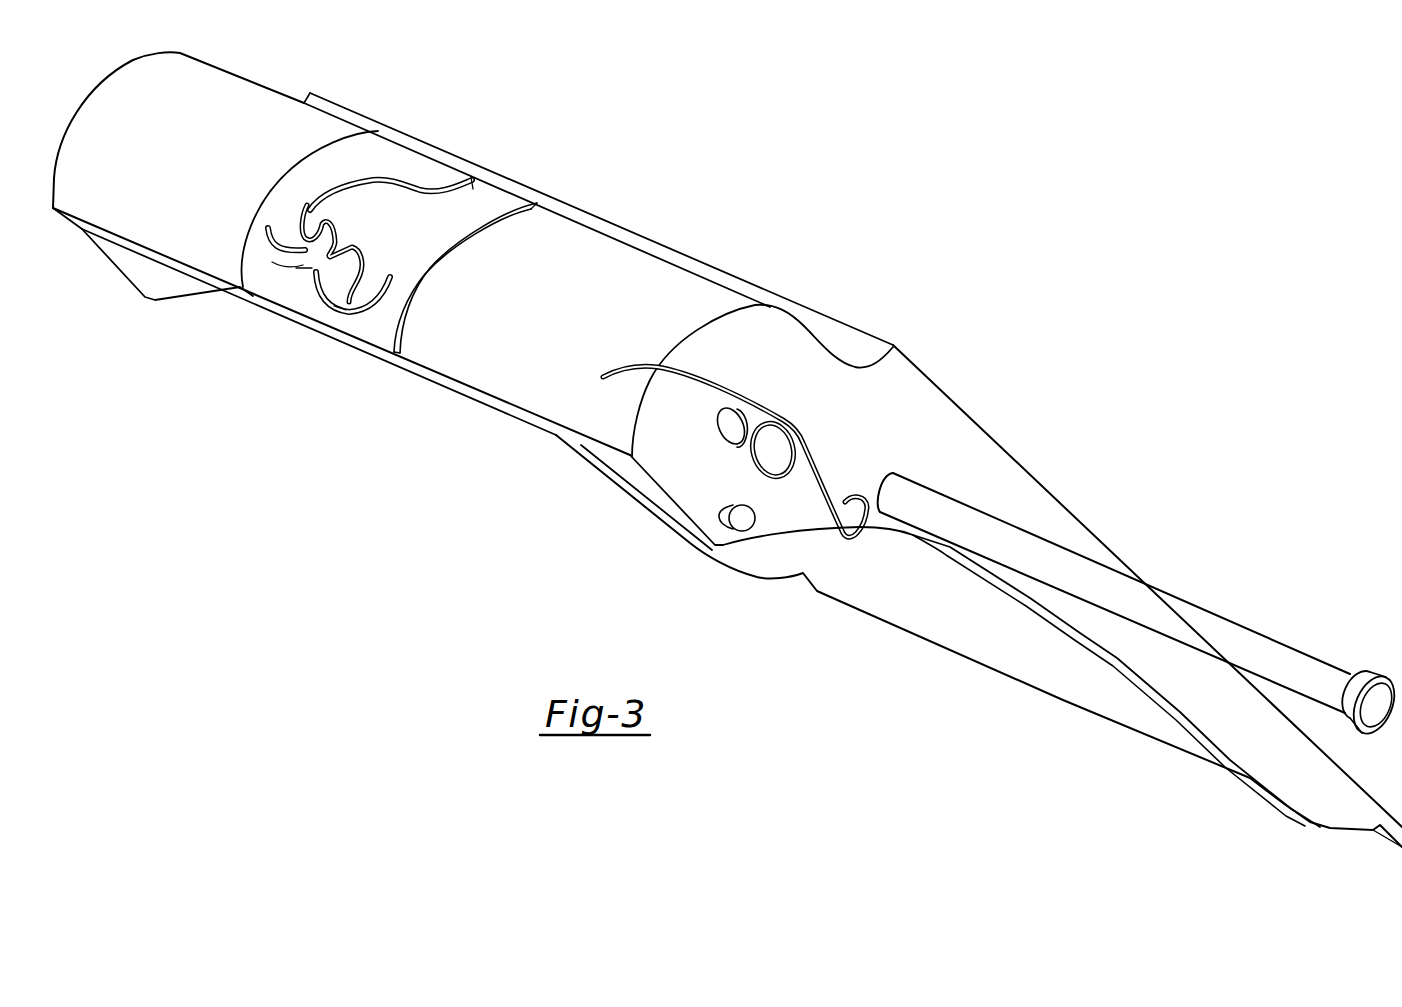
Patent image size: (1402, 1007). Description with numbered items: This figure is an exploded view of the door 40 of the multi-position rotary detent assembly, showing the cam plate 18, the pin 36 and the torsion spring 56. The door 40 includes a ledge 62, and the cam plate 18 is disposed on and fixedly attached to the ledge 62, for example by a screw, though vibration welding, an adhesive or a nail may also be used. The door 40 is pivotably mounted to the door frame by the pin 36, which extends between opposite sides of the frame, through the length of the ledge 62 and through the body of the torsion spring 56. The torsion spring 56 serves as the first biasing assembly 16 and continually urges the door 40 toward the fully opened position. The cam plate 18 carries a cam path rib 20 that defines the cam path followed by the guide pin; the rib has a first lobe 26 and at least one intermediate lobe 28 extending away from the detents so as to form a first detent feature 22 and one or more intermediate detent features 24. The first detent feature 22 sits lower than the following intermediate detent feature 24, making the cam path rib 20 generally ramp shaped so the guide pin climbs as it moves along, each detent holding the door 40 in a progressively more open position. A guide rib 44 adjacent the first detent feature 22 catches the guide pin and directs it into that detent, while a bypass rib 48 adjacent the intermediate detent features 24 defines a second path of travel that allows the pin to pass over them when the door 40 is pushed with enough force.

The first biasing assembly 16 is at (806, 430).
The cam plate 18 is at (495, 193).
The cam path rib 20 is at (385, 180).
The first detent feature 22 is at (308, 215).
The intermediate detent feature 24 is at (350, 250).
The first lobe 26 is at (291, 245).
The intermediate lobe 28 is at (304, 272).
The pin 36 is at (1173, 610).
The door 40 is at (1012, 458).
The guide rib 44 is at (266, 284).
The bypass rib 48 is at (340, 310).
The torsion spring 56 is at (752, 451).
The ledge 62 is at (513, 379).